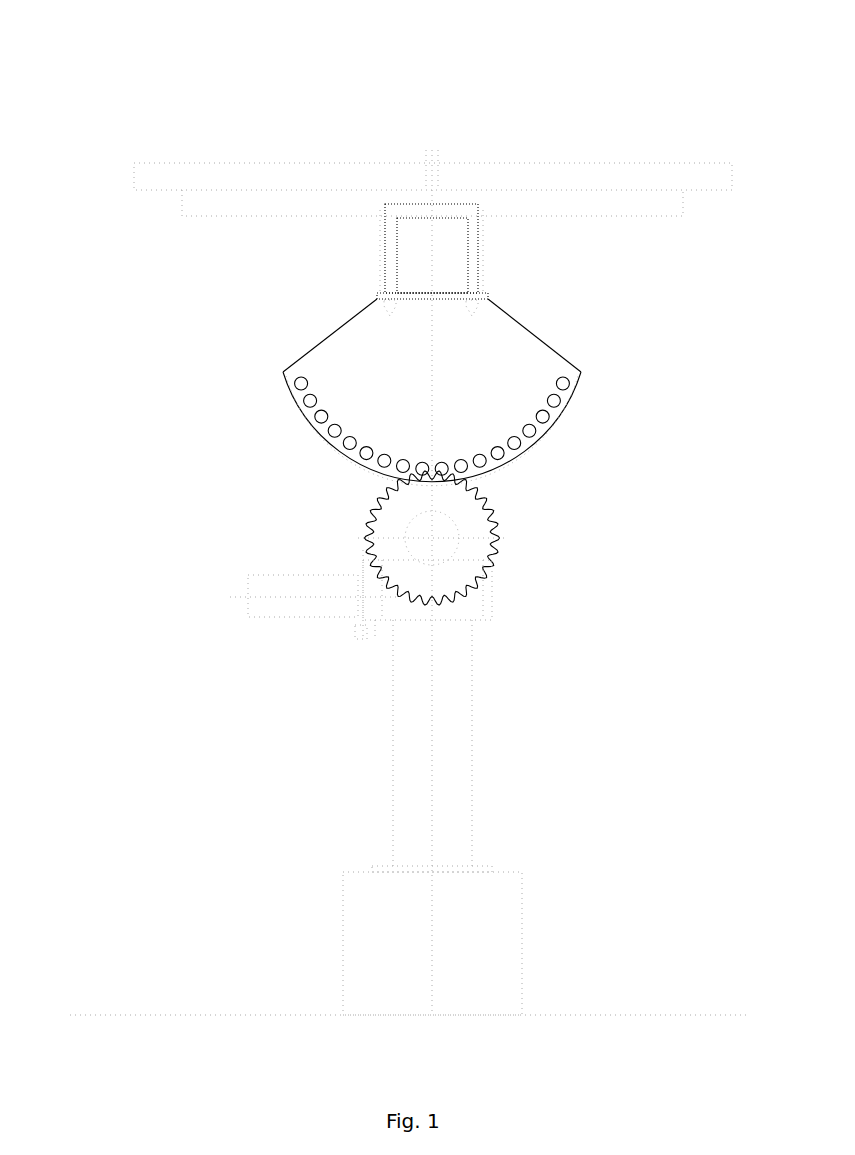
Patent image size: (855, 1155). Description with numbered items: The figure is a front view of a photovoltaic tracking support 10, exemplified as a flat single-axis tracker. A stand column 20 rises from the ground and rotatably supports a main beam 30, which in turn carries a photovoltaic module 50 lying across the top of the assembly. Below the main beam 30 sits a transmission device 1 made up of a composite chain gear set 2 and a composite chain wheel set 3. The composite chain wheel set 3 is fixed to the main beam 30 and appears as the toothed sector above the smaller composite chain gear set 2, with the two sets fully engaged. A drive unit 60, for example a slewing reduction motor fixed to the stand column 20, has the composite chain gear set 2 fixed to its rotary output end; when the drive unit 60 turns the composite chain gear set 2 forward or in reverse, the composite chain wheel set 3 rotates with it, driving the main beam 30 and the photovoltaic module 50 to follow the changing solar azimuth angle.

The photovoltaic tracking support 10 is at (439, 27).
The photovoltaic module 50 is at (565, 172).
The main beam 30 is at (453, 266).
The transmission device 1 is at (396, 425).
The composite chain wheel set 3 is at (352, 393).
The composite chain gear set 2 is at (497, 563).
The drive unit 60 is at (305, 596).
The stand column 20 is at (455, 780).